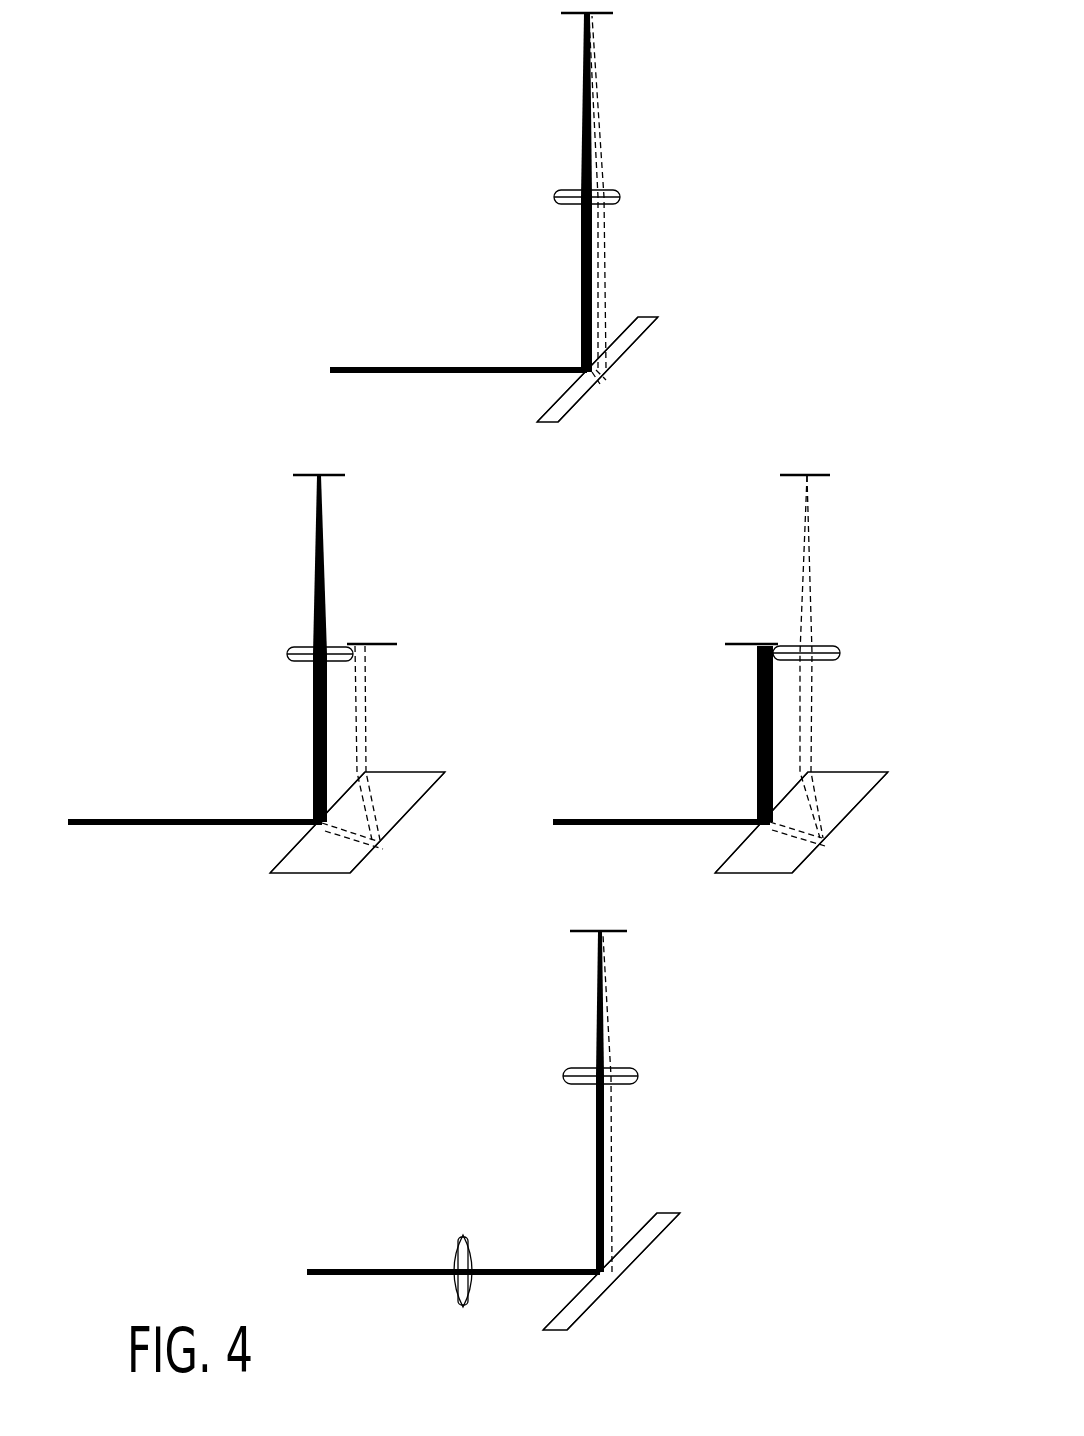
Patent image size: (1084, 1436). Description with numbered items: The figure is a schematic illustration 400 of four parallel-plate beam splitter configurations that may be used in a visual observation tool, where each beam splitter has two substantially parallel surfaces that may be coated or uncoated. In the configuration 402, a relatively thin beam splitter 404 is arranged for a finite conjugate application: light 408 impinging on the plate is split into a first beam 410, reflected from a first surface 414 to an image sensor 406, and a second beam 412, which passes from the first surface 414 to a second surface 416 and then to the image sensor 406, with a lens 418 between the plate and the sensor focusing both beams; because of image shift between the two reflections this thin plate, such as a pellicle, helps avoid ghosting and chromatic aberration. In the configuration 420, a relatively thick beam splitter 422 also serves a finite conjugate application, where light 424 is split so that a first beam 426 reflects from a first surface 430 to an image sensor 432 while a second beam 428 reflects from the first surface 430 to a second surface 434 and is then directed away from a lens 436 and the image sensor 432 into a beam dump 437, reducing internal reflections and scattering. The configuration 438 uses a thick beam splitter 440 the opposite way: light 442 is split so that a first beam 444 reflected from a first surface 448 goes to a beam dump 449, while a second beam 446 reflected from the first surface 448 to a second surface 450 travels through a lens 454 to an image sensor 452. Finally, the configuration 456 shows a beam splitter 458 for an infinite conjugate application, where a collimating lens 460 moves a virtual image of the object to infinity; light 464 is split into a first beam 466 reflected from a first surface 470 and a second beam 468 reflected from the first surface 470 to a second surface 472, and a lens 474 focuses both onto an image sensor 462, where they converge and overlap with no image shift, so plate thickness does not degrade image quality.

The schematic illustration 400 is at (152, 48).
The configuration 402 is at (434, 92).
The beam splitter 404 is at (572, 395).
The image sensor 406 is at (605, 15).
The light 408 is at (490, 372).
The first beam 410 is at (582, 305).
The second beam 412 is at (603, 272).
The first surface 414 is at (548, 402).
The second surface 416 is at (640, 340).
The lens 418 is at (612, 192).
The configuration 420 is at (187, 564).
The beam splitter 422 is at (346, 855).
The light 424 is at (218, 825).
The first beam 426 is at (318, 755).
The second beam 428 is at (365, 762).
The first surface 430 is at (285, 855).
The image sensor 432 is at (337, 478).
The second surface 434 is at (412, 806).
The lens 436 is at (337, 646).
The beam dump 437 is at (388, 646).
The configuration 438 is at (669, 559).
The beam splitter 440 is at (792, 855).
The light 442 is at (665, 825).
The first beam 444 is at (758, 752).
The second beam 446 is at (812, 728).
The first surface 448 is at (722, 855).
The beam dump 449 is at (742, 646).
The second surface 450 is at (858, 806).
The image sensor 452 is at (820, 478).
The lens 454 is at (815, 648).
The configuration 456 is at (394, 1041).
The beam splitter 458 is at (590, 1297).
The collimating lens 460 is at (462, 1235).
The image sensor 462 is at (620, 933).
The light 464 is at (420, 1273).
The first beam 466 is at (596, 1190).
The second beam 468 is at (612, 1165).
The first surface 470 is at (565, 1303).
The second surface 472 is at (658, 1240).
The lens 474 is at (630, 1072).